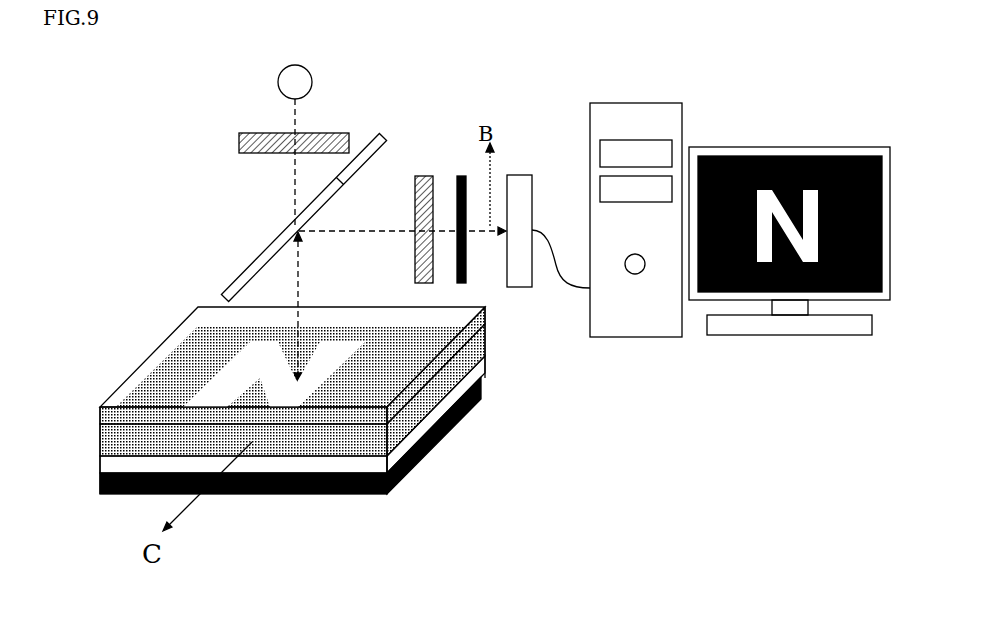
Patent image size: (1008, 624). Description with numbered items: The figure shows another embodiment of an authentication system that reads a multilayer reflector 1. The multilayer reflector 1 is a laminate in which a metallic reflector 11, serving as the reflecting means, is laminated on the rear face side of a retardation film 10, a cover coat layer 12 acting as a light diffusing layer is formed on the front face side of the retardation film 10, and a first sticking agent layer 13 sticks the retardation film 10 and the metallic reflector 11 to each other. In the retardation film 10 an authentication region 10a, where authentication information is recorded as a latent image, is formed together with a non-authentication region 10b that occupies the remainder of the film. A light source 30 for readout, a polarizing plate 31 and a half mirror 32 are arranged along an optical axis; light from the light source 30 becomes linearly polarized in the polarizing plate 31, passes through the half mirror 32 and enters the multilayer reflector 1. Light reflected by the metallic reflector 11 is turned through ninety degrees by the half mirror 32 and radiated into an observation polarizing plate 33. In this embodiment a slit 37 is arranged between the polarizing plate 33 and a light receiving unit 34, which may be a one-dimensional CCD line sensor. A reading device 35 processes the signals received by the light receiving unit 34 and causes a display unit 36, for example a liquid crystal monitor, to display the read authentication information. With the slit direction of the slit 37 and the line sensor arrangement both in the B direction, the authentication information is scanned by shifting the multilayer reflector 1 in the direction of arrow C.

The multilayer reflector 1 is at (557, 300).
The retardation film 10 is at (442, 388).
The authentication region 10a is at (235, 375).
The non-authentication region 10b is at (161, 408).
The metallic reflector 11 is at (442, 433).
The cover coat layer 12 is at (443, 360).
The first sticking agent layer 13 is at (440, 406).
The light source 30 is at (285, 66).
The polarizing plate 31 is at (247, 133).
The half mirror 32 is at (250, 268).
The polarizing plate 33 is at (424, 175).
The light receiving unit 34 is at (519, 195).
The reading device 35 is at (663, 128).
The display unit 36 is at (773, 150).
The slit 37 is at (462, 176).